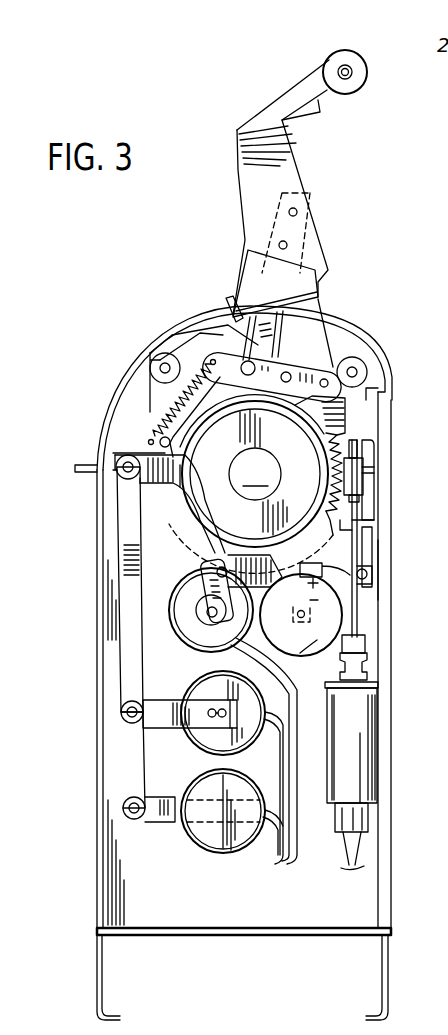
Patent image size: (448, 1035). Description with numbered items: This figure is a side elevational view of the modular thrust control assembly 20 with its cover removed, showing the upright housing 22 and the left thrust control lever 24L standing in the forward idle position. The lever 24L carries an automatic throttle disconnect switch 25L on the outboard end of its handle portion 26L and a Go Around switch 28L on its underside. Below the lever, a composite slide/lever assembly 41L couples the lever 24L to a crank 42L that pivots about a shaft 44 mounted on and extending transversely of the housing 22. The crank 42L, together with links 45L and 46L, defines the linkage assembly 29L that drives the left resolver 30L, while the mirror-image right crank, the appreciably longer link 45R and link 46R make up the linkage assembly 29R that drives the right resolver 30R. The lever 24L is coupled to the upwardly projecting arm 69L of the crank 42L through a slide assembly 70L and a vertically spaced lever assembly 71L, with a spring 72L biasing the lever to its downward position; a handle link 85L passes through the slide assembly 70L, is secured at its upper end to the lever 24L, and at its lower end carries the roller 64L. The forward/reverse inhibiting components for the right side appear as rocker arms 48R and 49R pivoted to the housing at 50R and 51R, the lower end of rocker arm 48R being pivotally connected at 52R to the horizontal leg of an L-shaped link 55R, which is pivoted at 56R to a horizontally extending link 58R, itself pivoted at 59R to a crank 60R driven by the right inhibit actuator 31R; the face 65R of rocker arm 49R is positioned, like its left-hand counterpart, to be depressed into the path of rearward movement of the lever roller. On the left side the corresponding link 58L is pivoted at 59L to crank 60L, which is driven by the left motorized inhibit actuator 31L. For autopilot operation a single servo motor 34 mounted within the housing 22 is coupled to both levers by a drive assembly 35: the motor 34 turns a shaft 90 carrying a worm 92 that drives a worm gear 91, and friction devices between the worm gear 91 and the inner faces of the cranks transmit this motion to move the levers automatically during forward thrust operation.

The modular thrust control assembly 20 is at (85, 302).
The upright housing 22 is at (97, 800).
The thrust control lever 24L is at (242, 170).
The automatic throttle disconnect switch 25L is at (340, 68).
The handle portion 26L is at (393, 22).
The Go Around switch 28L is at (316, 122).
The linkage assembly 29L is at (110, 635).
The linkage assembly 29R is at (120, 746).
The resolver 30L is at (195, 735).
The resolver 30R is at (238, 828).
The motorized inhibit actuator 31L is at (175, 603).
The inhibit actuator 31R is at (335, 657).
The servo motor 34 is at (363, 777).
The drive assembly 35 is at (374, 465).
The composite slide/lever assembly 41L is at (327, 330).
The crank 42L is at (148, 440).
The shaft 44 is at (251, 487).
The link 45L is at (122, 497).
The link 45R is at (130, 785).
The link 46L is at (150, 700).
The link 46R is at (157, 823).
The rocker arm 48R is at (193, 343).
The rocker arm 49R is at (356, 358).
The pivot 50R is at (152, 367).
The pivot 51R is at (378, 372).
The pivot connection 52R is at (153, 436).
The L-shaped link 55R is at (364, 543).
The pivot 56R is at (380, 567).
The link 58L is at (212, 553).
The link 58R is at (370, 577).
The pivot 59L is at (208, 568).
The pivot 59R is at (325, 606).
The crank 60L is at (216, 584).
The crank 60R is at (312, 616).
The roller 64L is at (235, 310).
The face 65R is at (196, 345).
The upwardly projecting arm 69L is at (332, 300).
The slide assembly 70L is at (322, 266).
The lever assembly 71L is at (352, 394).
The spring 72L is at (162, 402).
The handle link 85L is at (237, 286).
The shaft 90 is at (358, 642).
The worm gear 91 is at (333, 496).
The worm 92 is at (358, 478).